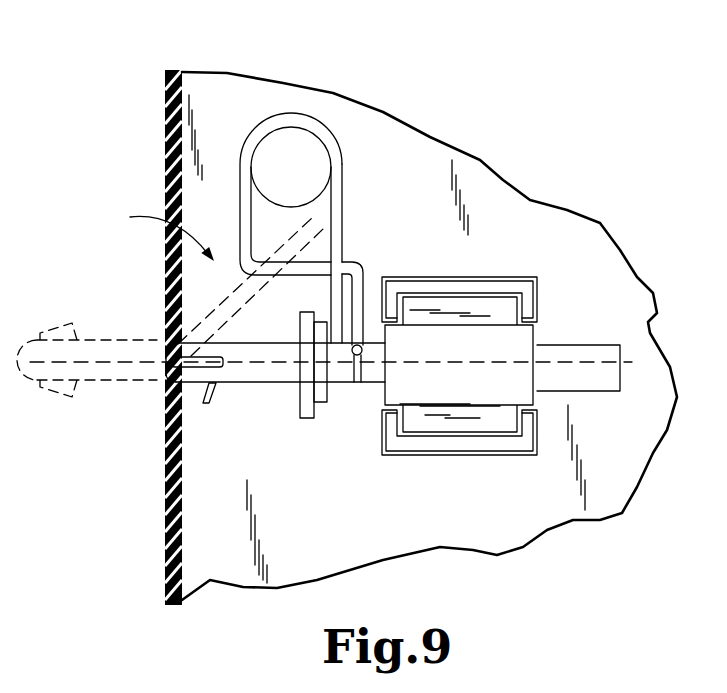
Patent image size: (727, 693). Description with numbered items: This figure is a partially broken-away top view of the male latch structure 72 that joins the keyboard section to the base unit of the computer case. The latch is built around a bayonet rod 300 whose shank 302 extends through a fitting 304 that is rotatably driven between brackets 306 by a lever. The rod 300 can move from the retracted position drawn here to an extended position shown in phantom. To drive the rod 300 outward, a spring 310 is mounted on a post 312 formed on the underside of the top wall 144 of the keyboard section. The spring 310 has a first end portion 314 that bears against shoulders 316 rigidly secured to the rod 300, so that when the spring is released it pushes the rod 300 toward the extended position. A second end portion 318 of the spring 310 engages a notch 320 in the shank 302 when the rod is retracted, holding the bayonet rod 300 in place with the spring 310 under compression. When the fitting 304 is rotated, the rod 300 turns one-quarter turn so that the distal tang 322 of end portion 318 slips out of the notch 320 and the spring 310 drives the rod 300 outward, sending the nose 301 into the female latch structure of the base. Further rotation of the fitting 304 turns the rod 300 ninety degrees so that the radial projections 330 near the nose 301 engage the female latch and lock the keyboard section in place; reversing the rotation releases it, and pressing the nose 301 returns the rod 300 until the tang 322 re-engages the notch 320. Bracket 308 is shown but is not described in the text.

The top wall 144 is at (247, 84).
The male latch structure 72 is at (208, 279).
The bayonet rod 300 is at (258, 384).
The nose 301 is at (165, 368).
The radial projections 330 is at (188, 352).
The shoulders 316 is at (300, 405).
The spring 310 is at (312, 118).
The post 312 is at (312, 176).
The first end portion 314 is at (341, 203).
The second end portion 318 is at (362, 268).
The notch 320 is at (353, 362).
The tang 322 is at (362, 384).
The upper bracket 308 is at (460, 278).
The fitting 304 is at (468, 399).
The brackets 306 is at (462, 456).
The shank 302 is at (557, 345).